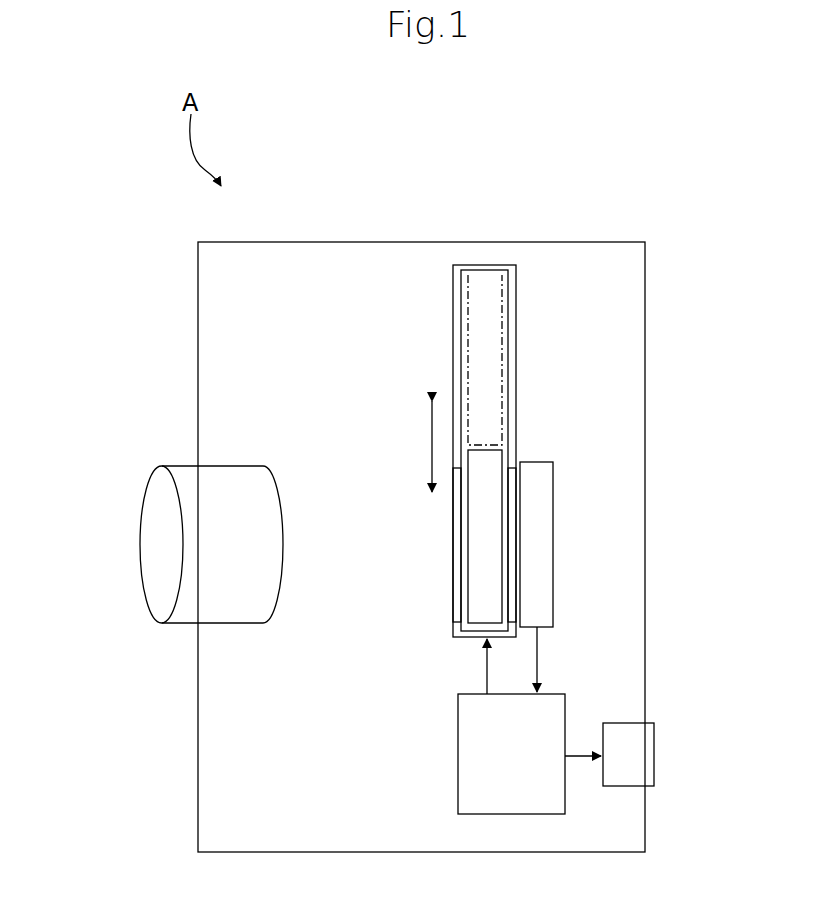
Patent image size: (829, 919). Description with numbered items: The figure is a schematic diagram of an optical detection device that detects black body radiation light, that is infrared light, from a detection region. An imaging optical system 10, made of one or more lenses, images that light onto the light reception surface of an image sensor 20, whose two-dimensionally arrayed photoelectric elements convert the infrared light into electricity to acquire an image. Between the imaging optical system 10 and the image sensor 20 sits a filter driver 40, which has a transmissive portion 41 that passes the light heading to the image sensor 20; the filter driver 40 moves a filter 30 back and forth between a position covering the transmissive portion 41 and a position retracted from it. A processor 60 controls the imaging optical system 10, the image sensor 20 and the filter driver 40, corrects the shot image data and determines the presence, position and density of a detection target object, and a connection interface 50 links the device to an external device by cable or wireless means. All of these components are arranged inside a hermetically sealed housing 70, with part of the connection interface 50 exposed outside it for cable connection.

The imaging optical system 10 is at (183, 480).
The image sensor 20 is at (548, 475).
The filter 30 is at (466, 604).
The filter driver 40 is at (455, 313).
The transmissive portion 41 is at (513, 538).
The connection interface 50 is at (650, 740).
The processor 60 is at (470, 764).
The housing 70 is at (292, 248).